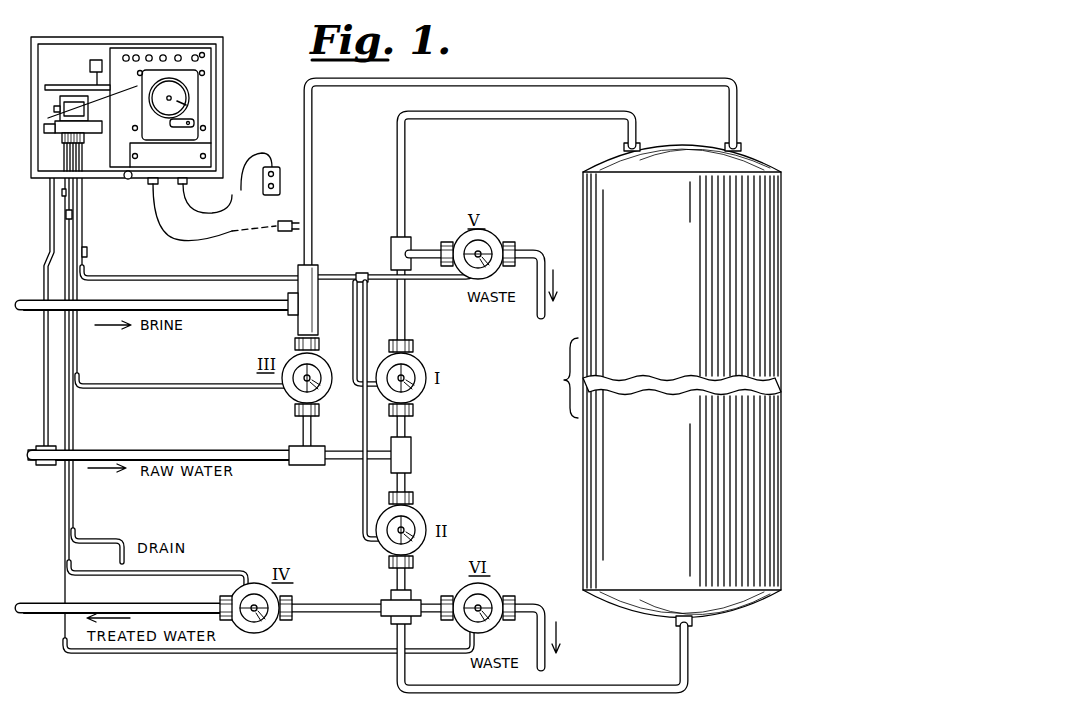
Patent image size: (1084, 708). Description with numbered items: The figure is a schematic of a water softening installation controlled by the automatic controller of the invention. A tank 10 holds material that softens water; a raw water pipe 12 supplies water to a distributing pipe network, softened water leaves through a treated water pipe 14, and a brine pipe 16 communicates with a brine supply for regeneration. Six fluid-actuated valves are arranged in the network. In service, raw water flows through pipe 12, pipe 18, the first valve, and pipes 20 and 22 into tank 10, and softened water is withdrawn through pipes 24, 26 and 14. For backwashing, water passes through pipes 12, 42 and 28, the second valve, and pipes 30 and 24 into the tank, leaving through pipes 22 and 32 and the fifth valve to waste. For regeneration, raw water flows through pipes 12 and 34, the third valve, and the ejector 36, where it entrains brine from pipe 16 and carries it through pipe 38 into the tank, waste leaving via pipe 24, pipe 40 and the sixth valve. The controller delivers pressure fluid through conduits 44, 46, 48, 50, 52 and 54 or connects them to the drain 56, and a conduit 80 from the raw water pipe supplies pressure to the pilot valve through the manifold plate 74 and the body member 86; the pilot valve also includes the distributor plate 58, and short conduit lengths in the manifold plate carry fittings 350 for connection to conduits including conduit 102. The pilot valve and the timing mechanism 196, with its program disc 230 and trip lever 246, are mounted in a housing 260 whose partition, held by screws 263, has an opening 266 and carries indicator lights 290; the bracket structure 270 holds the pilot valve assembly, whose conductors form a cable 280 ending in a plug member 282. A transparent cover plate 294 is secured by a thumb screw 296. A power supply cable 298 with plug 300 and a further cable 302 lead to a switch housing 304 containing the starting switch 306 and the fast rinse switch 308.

The tank 10 is at (590, 490).
The raw water pipe 12 is at (136, 450).
The treated water pipe 14 is at (143, 604).
The brine pipe 16 is at (226, 310).
The pipe 18 is at (406, 420).
The pipe 20 is at (404, 312).
The pipe 22 is at (503, 118).
The pipe 24 is at (603, 688).
The pipe 26 is at (341, 602).
The pipe 28 is at (406, 481).
The pipe 30 is at (412, 582).
The pipe 32 is at (420, 248).
The pipe 34 is at (300, 428).
The ejector 36 is at (318, 303).
The pipe 38 is at (544, 80).
The pipe 40 is at (425, 612).
The pipe 42 is at (346, 452).
The conduit 44 is at (302, 655).
The conduit 46 is at (209, 571).
The conduit 48 is at (362, 497).
The conduit 50 is at (223, 388).
The conduit 52 is at (353, 344).
The conduit 54 is at (435, 277).
The drain 56 is at (104, 539).
The distributor plate 58 is at (86, 143).
The manifold plate 74 is at (89, 146).
The conduit 80 is at (43, 378).
The body member 86 is at (80, 128).
The conduit 102 is at (223, 277).
The timing mechanism 196 is at (204, 73).
The program disc 230 is at (156, 101).
The trip lever 246 is at (182, 128).
The housing 260 is at (199, 92).
The screws 263 is at (126, 54).
The opening 266 is at (95, 96).
The bracket structure 270 is at (57, 100).
The cable 280 is at (90, 72).
The plug member 282 is at (98, 60).
The indicator lights 290 is at (178, 54).
The transparent cover plate 294 is at (204, 99).
The thumb screw 296 is at (125, 179).
The power supply cable 298 is at (160, 232).
The plug 300 is at (288, 232).
The cable 302 is at (215, 211).
The switch housing 304 is at (277, 157).
The starting switch 306 is at (263, 190).
The fast rinse switch 308 is at (277, 194).
The fittings 350 is at (66, 214).